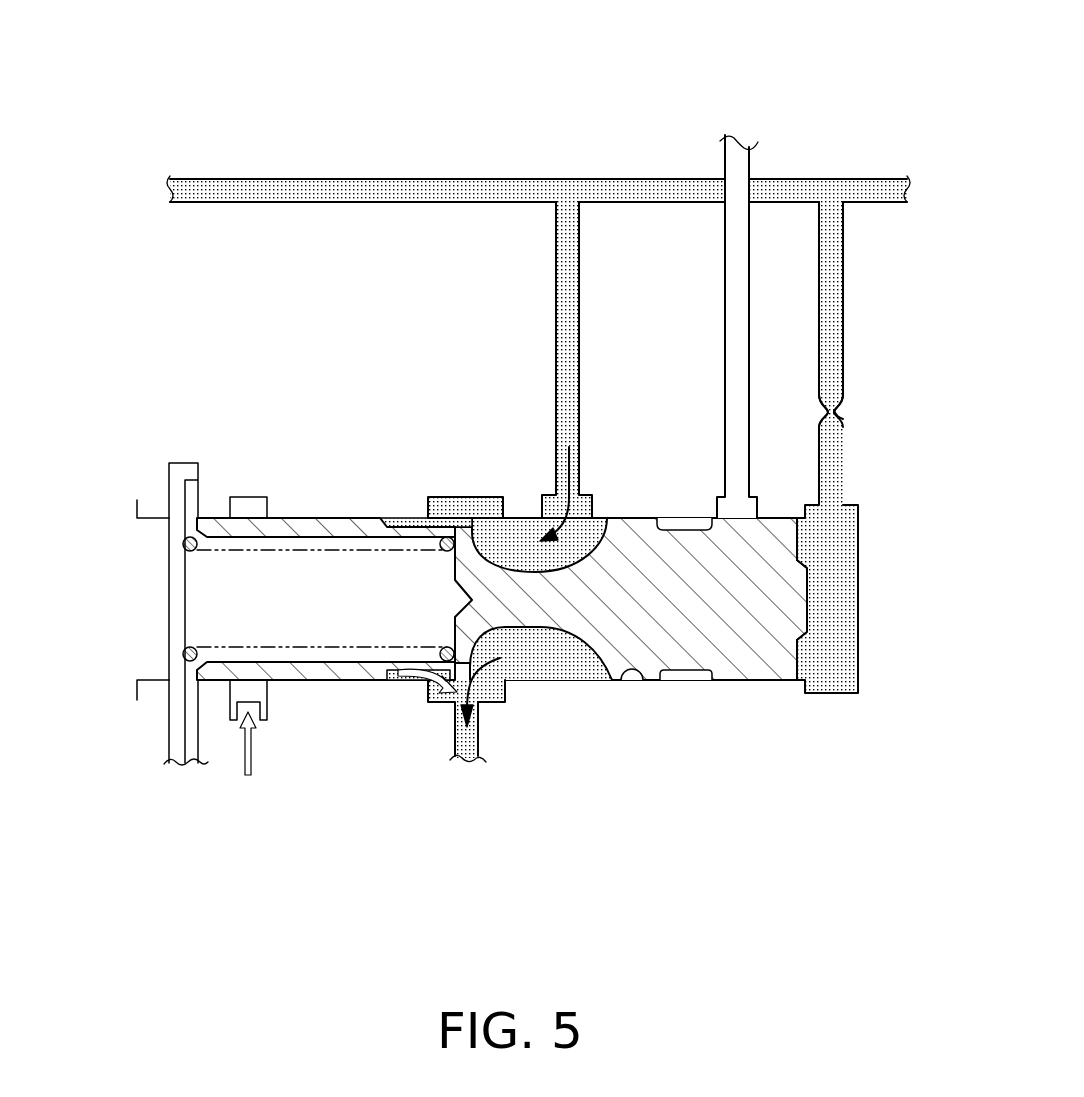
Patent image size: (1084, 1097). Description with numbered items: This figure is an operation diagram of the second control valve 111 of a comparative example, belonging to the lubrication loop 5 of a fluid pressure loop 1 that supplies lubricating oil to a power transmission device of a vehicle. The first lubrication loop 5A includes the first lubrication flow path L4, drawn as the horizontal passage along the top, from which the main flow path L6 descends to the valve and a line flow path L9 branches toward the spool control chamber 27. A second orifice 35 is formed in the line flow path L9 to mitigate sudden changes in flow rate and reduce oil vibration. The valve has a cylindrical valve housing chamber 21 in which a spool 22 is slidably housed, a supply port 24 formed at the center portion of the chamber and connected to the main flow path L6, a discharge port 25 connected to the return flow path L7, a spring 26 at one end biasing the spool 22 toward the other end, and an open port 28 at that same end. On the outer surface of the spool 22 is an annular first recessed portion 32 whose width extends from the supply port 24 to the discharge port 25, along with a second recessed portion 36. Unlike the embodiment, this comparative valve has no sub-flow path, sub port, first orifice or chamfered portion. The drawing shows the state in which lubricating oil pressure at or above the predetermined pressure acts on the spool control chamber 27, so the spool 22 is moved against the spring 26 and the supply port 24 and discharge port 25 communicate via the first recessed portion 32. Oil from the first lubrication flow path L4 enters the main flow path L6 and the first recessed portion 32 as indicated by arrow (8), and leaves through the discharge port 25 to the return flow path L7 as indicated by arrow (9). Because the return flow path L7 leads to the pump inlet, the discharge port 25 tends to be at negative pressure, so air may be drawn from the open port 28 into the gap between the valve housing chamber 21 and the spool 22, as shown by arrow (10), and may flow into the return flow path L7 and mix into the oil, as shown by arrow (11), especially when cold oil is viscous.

The fluid pressure loop 1 is at (171, 60).
The lubrication loop 5 is at (294, 75).
The first lubrication loop 5A is at (256, 177).
The first lubrication flow path L4 is at (338, 178).
The main flow path L6 is at (580, 318).
The line flow path L9 is at (843, 318).
The second orifice 35 is at (836, 425).
The second recessed portion 36 is at (412, 516).
The discharge port 25 is at (460, 510).
The arrow 8 is at (578, 481).
The supply port 24 is at (593, 508).
The spring 26 is at (250, 556).
The spool control chamber 27 is at (843, 572).
The arrow 11 is at (430, 684).
The open port 28 is at (260, 704).
The arrow 10 is at (256, 758).
The return flow path L7 is at (455, 730).
The arrow 9 is at (504, 692).
The first recessed portion 32 is at (577, 665).
The valve housing chamber 21 is at (645, 685).
The second control valve of the comparative example 111 is at (663, 688).
The spool 22 is at (780, 660).